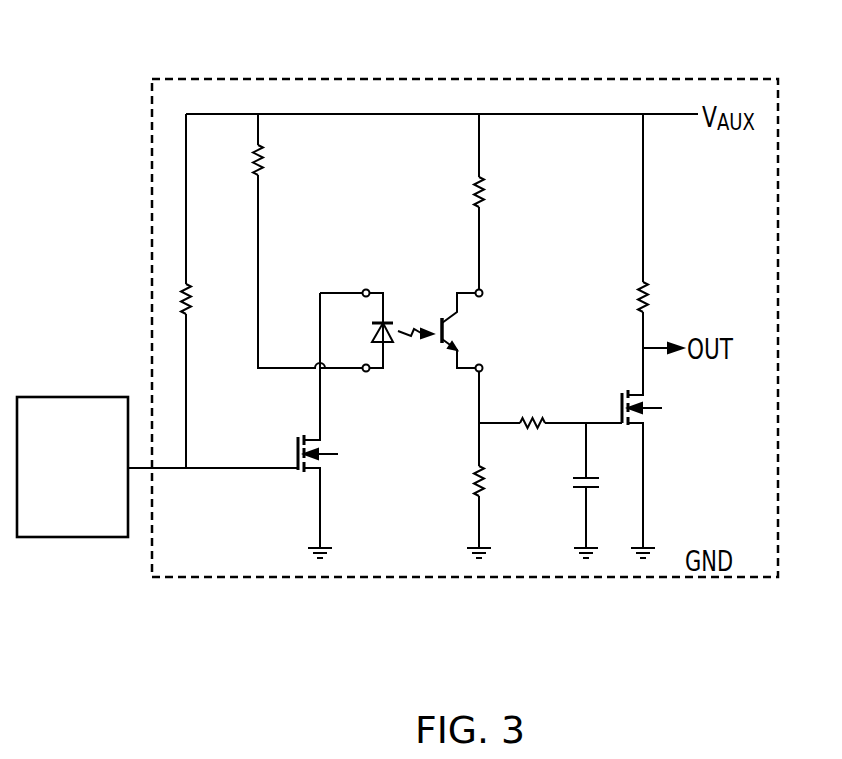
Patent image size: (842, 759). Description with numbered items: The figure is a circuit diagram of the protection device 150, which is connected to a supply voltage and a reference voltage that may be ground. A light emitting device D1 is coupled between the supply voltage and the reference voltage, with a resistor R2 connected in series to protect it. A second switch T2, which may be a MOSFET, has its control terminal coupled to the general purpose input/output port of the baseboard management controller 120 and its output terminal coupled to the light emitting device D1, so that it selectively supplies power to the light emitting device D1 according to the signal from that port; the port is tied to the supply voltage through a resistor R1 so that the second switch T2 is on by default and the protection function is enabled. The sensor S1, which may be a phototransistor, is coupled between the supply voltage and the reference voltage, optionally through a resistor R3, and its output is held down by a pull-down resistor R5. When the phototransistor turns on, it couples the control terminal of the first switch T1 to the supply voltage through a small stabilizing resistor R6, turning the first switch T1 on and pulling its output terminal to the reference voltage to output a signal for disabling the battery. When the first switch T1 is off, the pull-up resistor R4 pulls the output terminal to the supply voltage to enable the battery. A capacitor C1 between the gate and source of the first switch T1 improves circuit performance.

The protection device 150 is at (604, 79).
The Baseboard Management Controller BMC 120 is at (60, 397).
The resistor R1 is at (201, 301).
The resistor R2 is at (275, 162).
The resistor R3 is at (496, 195).
The pull-up resistor R4 is at (660, 300).
The pull-down resistor R5 is at (496, 482).
The resistor R6 is at (531, 444).
The light emitting device D1 is at (376, 331).
The sensor S1 is at (463, 331).
The capacitor C1 is at (600, 485).
The first switch T1 is at (637, 441).
The second switch T2 is at (311, 458).